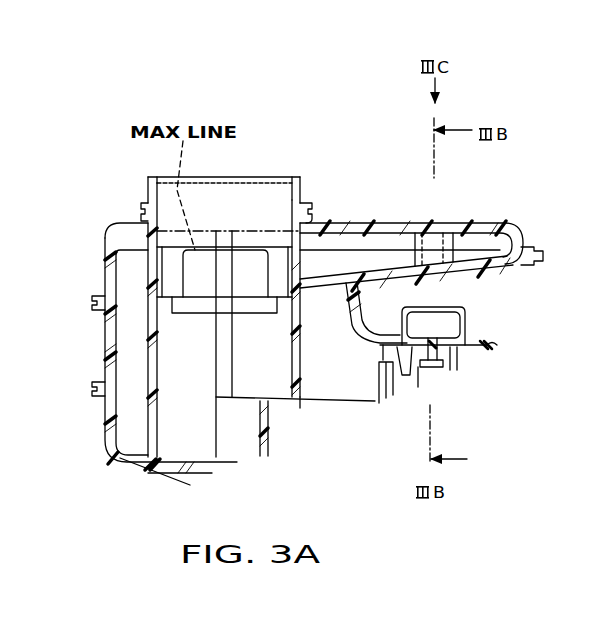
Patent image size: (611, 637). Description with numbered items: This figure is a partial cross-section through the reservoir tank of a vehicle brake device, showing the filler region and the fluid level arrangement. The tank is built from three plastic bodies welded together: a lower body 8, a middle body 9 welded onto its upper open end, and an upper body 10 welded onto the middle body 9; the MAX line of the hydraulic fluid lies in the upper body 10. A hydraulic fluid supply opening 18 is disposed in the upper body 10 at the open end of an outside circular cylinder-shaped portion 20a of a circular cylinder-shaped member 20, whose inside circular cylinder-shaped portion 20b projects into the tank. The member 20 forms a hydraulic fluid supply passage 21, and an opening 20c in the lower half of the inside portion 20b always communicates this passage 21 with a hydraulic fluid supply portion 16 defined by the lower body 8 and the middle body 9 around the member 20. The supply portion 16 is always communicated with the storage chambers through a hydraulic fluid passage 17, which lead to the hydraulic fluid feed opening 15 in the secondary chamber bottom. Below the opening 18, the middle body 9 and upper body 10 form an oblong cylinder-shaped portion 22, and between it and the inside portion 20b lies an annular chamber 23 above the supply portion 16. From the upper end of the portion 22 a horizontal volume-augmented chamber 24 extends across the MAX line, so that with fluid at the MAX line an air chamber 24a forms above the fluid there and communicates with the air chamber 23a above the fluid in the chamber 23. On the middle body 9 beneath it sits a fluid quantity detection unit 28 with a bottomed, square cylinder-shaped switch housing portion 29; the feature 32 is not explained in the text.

The lower body 8 is at (103, 427).
The middle body 9 is at (100, 332).
The upper body 10 is at (110, 255).
The hydraulic fluid feed opening 15 is at (476, 228).
The hydraulic fluid supply portion 16 is at (137, 443).
The hydraulic fluid passage 17 is at (390, 352).
The hydraulic fluid supply opening 18 is at (294, 197).
The circular cylinder-shaped member 20 is at (146, 351).
The outside circular cylinder-shaped portion 20a is at (150, 192).
The inside circular cylinder-shaped portion 20b is at (300, 360).
The opening 20c is at (293, 399).
The hydraulic fluid supply passage 21 is at (193, 395).
The oblong cylinder-shaped portion 22 is at (347, 297).
The annular chamber 23 is at (133, 283).
The air chamber 23a is at (132, 240).
The volume-augmented chamber 24 is at (372, 261).
The air chamber 24a is at (328, 232).
The fluid quantity detection unit 28 is at (475, 321).
The switch housing portion 29 is at (423, 307).
The rib 32 is at (412, 263).